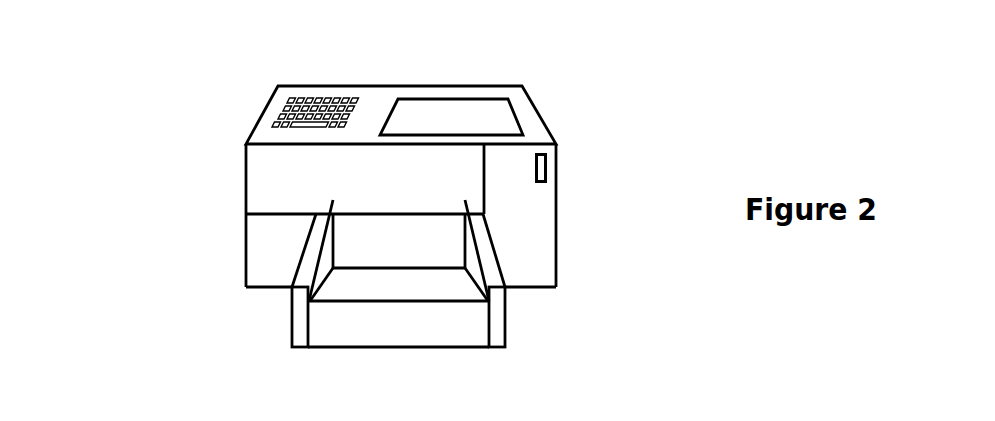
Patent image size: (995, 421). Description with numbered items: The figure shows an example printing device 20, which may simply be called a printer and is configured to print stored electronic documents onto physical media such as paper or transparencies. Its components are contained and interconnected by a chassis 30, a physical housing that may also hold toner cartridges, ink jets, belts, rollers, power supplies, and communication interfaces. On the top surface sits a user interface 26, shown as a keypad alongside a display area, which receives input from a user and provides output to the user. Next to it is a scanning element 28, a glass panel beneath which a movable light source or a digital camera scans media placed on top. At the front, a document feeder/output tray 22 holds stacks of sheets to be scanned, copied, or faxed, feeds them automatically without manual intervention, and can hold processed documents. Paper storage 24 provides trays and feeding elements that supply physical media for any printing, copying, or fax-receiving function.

The printing device 20 is at (74, 116).
The document feeder/output tray 22 is at (292, 323).
The paper storage 24 is at (558, 238).
The user interface 26 is at (280, 113).
The scanning element 28 is at (520, 122).
The chassis 30 is at (247, 183).